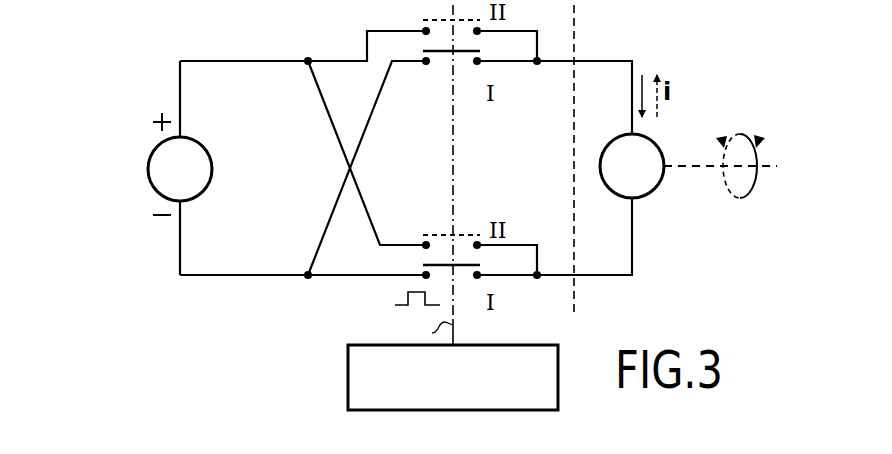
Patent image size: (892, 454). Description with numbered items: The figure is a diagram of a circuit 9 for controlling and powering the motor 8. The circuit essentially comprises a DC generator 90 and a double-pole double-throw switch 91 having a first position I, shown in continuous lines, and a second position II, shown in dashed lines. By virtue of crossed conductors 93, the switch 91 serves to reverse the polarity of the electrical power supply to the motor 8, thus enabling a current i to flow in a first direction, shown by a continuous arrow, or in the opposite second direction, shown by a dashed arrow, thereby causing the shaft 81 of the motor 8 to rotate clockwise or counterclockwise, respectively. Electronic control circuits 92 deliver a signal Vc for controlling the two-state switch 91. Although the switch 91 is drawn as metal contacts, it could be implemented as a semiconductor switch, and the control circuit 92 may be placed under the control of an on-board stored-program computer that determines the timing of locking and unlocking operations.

The circuit 9 is at (170, 30).
The DC generator 90 is at (178, 175).
The crossed conductors 93 is at (335, 160).
The double-pole double-throw switch 91 is at (442, 222).
The motor 8 is at (646, 152).
The shaft 81 is at (690, 170).
The control circuit 92 is at (362, 376).